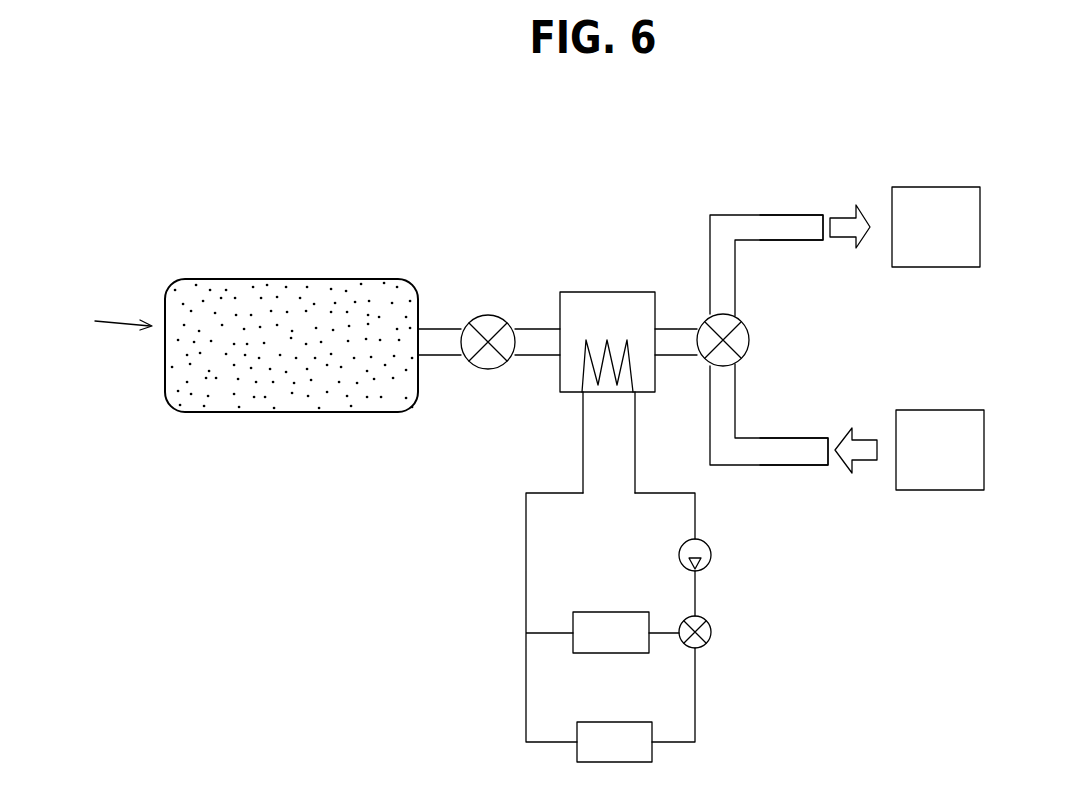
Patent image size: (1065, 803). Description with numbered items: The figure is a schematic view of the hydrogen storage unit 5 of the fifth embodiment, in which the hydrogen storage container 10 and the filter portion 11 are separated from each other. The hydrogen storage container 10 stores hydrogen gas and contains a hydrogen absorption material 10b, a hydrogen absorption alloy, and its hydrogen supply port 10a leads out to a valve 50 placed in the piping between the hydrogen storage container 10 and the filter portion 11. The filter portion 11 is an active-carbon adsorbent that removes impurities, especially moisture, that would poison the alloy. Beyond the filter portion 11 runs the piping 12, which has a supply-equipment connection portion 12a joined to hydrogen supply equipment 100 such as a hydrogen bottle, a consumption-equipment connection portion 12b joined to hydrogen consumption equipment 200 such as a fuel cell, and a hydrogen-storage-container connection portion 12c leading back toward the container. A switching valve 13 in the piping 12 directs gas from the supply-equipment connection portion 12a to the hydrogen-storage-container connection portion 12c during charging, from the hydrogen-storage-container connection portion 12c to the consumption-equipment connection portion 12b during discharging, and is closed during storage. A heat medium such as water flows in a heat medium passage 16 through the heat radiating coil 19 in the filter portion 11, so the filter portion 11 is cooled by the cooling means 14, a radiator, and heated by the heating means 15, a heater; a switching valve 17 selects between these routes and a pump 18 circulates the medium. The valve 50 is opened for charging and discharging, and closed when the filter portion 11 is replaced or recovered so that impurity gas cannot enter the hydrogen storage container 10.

The hydrogen storage unit 5 is at (112, 324).
The hydrogen storage container 10 is at (222, 279).
The hydrogen supply port 10a is at (420, 330).
The hydrogen absorption material 10b is at (232, 400).
The filter portion 11 is at (612, 292).
The piping 12 is at (733, 215).
The supply-equipment connection portion 12a is at (810, 467).
The consumption-equipment connection portion 12b is at (805, 215).
The hydrogen-storage-container connection portion 12c is at (673, 327).
The switching valve 13 is at (750, 340).
The cooling means 14 is at (600, 612).
The heating means 15 is at (603, 722).
The heat medium passage 16 is at (526, 530).
The switching valve 17 is at (712, 632).
The pump 18 is at (712, 555).
The heat radiating coil 19 is at (580, 370).
The valve 50 is at (488, 315).
The hydrogen supply equipment 100 is at (988, 492).
The hydrogen consumption equipment 200 is at (975, 268).